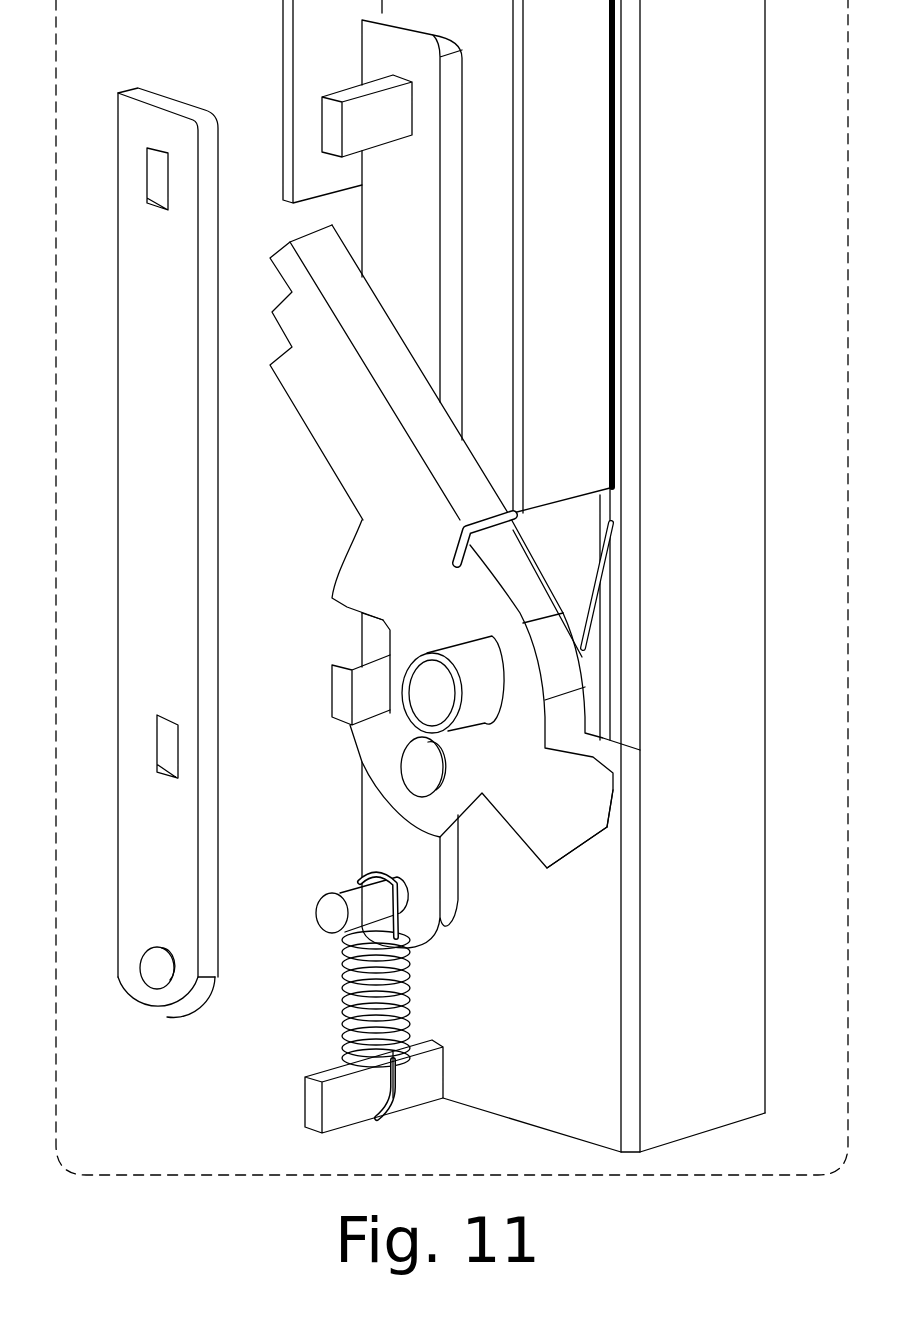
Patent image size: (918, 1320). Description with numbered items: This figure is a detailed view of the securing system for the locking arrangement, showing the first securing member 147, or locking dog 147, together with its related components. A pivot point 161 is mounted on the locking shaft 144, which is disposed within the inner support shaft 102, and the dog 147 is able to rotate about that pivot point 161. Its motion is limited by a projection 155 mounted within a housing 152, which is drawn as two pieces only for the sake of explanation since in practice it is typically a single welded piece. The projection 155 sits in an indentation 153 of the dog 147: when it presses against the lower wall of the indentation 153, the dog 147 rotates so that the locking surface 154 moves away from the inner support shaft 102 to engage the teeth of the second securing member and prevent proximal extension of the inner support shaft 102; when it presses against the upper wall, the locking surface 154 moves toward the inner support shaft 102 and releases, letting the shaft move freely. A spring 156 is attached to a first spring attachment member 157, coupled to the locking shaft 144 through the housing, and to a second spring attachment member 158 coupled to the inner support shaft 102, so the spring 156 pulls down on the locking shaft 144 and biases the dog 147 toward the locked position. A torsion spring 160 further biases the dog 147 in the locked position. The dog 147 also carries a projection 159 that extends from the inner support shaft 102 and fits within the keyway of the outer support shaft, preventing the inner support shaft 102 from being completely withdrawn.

The inner support shaft 102 is at (570, 1061).
The locking shaft 144 is at (493, 28).
The housing 152 is at (423, 221).
The first securing member 147 is at (411, 570).
The indentation 153 is at (384, 625).
The locking surface 154 is at (278, 300).
The projection 155 is at (347, 725).
The spring 156 is at (410, 978).
The first spring attachment member 157 is at (317, 932).
The second spring attachment member 158 is at (305, 1115).
The projection 159 is at (605, 825).
The torsion spring 160 is at (457, 527).
The pivot point 161 is at (474, 650).